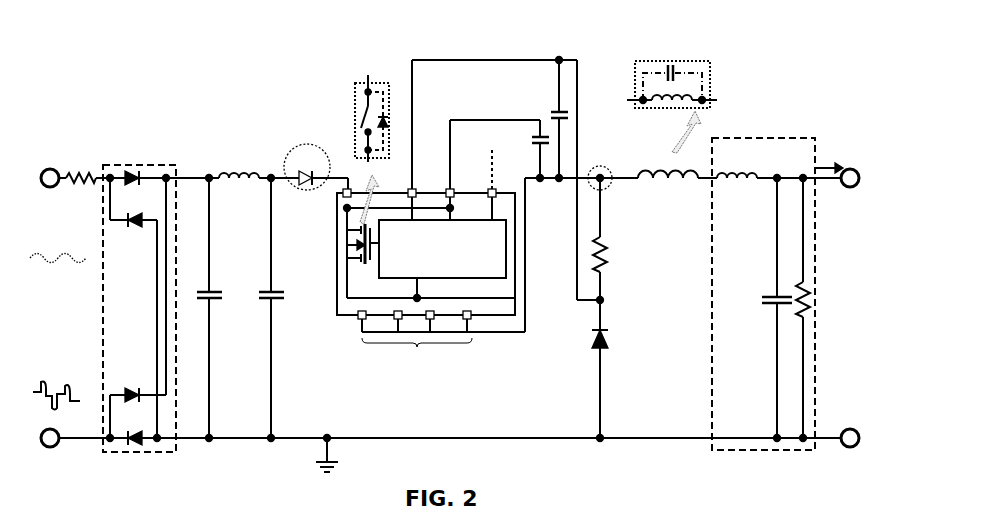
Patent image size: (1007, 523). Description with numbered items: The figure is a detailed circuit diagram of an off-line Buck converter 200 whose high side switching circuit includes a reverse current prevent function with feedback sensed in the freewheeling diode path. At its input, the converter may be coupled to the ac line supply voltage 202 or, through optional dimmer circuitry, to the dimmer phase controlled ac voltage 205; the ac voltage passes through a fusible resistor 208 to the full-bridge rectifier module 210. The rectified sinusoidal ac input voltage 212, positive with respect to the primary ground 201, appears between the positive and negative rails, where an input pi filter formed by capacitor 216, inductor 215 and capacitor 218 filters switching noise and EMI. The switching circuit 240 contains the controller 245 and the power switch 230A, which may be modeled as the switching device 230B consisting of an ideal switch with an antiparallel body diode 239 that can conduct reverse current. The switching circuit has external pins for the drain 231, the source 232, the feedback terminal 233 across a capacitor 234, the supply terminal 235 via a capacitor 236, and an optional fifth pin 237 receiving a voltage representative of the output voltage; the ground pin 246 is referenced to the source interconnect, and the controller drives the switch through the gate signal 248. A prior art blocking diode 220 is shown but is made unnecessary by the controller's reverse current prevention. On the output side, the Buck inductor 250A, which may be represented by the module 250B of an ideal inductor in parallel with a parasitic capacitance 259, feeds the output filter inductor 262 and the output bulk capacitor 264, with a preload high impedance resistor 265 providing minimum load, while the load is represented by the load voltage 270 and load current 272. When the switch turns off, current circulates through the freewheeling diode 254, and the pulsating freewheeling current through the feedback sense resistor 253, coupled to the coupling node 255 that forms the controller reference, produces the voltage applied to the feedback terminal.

The off-line Buck converter 200 is at (175, 25).
The primary ground 201 is at (316, 465).
The ac line supply voltage 202 is at (76, 248).
The dimmer phase controlled ac voltage 205 is at (69, 372).
The fusible resistor 208 is at (89, 168).
The full-bridge rectifier module 210 is at (117, 164).
The rectified sinusoidal ac input voltage 212 is at (178, 151).
The inductor LF 215 is at (240, 166).
The capacitor CF1 216 is at (218, 305).
The capacitor CF2 218 is at (261, 288).
The reverse current blocking diode Dblock 220 is at (300, 156).
The power switch S1 230A is at (348, 241).
The switching device S1equi 230B is at (355, 102).
The drain 231 is at (347, 178).
The source 232 is at (459, 352).
The feedback FB 233 is at (426, 172).
The capacitor 234 is at (554, 111).
The supply terminal BP 235 is at (468, 174).
The capacitor 236 is at (524, 136).
The fifth pin 237 is at (502, 169).
The antiparallel body diode 239 is at (388, 112).
The switching circuit 240 is at (346, 330).
The controller 245 is at (442, 249).
The ground connection Gnd pin 246 is at (449, 292).
The gate signal 248 is at (375, 254).
The Buck inductor L1 250A is at (644, 160).
The module L1equi 250B is at (718, 84).
The feedback sense resistor RFB 253 is at (612, 250).
The freewheeling diode D1 254 is at (624, 322).
The coupling node X 255 is at (594, 162).
The parasitic capacitance 259 is at (688, 56).
The output filter inductor LFO 262 is at (757, 160).
The output bulk capacitor CO 264 is at (774, 312).
The preload high impedance resistor 265 is at (814, 296).
The load voltage VO 270 is at (852, 146).
The load current IO 272 is at (818, 146).